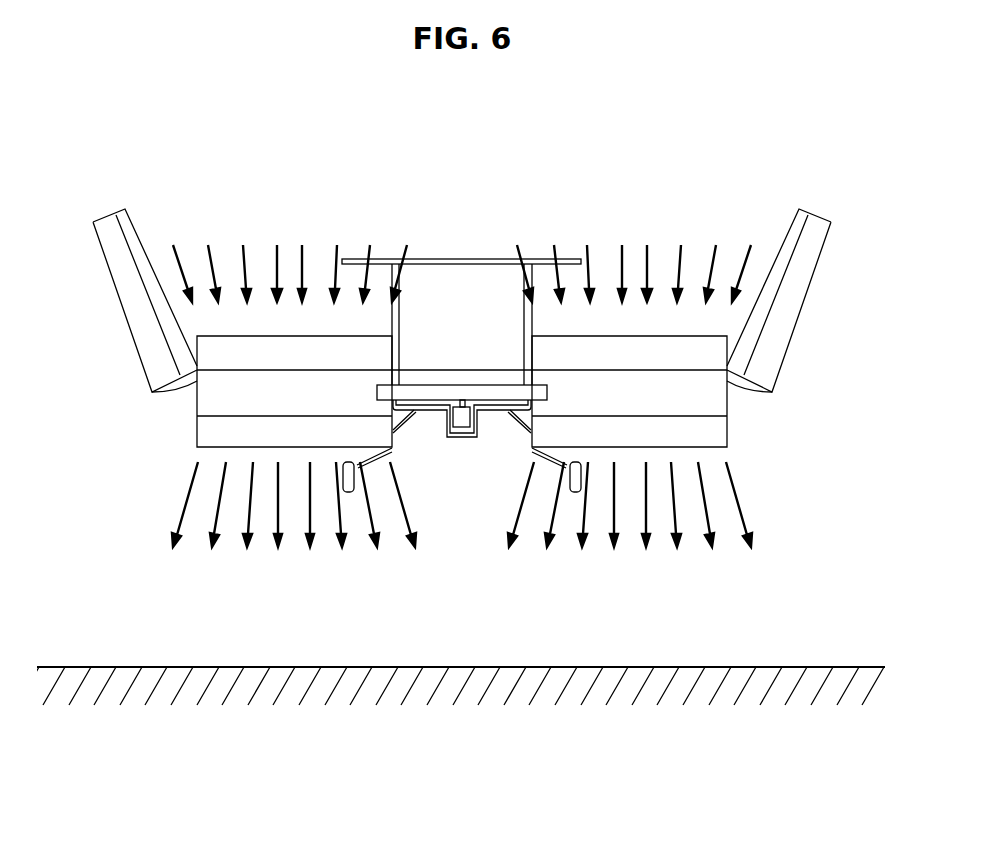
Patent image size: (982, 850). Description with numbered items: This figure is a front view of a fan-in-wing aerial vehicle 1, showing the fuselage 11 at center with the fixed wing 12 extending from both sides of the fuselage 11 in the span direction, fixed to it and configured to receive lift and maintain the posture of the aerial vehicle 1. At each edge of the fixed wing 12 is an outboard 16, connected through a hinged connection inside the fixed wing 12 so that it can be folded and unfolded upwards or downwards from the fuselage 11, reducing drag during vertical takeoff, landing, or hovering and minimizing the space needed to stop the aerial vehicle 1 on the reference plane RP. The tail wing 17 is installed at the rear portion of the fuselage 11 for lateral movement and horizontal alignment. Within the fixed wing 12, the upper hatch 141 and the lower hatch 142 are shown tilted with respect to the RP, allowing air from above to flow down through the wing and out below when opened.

The aerial vehicle 1 is at (470, 125).
The fuselage 11 is at (447, 390).
The fixed wing 12 is at (210, 398).
The outboard 16 is at (128, 291).
The tail wing 17 is at (461, 259).
The upper hatch 141 is at (305, 353).
The lower hatch 142 is at (212, 433).
The reference plane RP is at (810, 667).